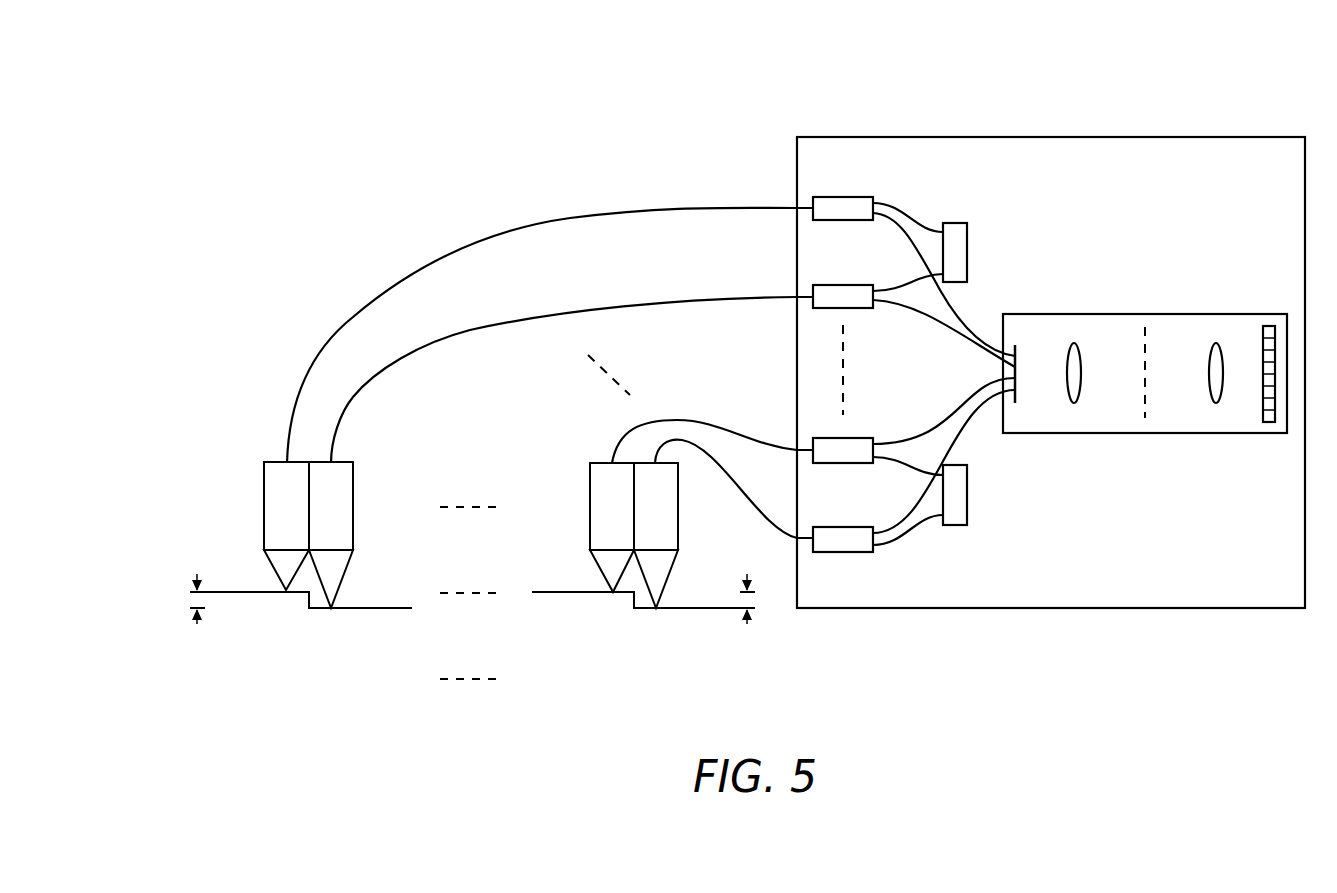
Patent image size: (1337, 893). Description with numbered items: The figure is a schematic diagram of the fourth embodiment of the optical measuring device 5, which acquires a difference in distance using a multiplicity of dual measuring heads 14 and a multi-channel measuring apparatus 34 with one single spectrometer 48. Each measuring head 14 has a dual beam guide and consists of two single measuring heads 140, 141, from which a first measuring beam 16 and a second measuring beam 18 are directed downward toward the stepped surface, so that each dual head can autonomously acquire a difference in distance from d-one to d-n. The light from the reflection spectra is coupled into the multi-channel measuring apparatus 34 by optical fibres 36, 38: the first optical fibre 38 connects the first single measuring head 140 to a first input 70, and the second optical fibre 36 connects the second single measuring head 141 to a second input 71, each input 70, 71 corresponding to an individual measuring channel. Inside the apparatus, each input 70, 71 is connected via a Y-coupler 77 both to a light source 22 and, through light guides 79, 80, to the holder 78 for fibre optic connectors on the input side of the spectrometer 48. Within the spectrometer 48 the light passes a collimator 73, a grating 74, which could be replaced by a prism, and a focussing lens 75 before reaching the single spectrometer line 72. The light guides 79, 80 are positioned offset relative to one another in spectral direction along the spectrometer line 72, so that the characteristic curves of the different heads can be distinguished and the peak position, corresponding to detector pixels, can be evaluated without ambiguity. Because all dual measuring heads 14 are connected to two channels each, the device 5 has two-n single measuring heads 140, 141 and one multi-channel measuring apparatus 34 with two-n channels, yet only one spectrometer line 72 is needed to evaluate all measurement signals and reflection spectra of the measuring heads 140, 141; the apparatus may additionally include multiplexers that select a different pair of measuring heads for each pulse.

The optical measuring device 5 is at (566, 184).
The measuring head 14 is at (355, 459).
The single measuring head 141 is at (263, 490).
The single measuring head 140 is at (354, 490).
The second measuring beam 18 is at (282, 574).
The first measuring beam 16 is at (343, 573).
The optical fibre 36 is at (458, 248).
The optical fibre 38 is at (458, 331).
The multi-channel measuring apparatus input 71 is at (794, 206).
The multi-channel measuring apparatus input 70 is at (794, 299).
The multi-channel measuring apparatus 34 is at (1281, 181).
The Y-coupler 77 is at (845, 205).
The light source 22 is at (962, 250).
The light guide 79 is at (972, 338).
The light guide 80 is at (915, 315).
The spectrometer 48 is at (1125, 314).
The holder for fibre optic connectors 78 is at (1016, 350).
The collimator 73 is at (1075, 347).
The grating 74 is at (1147, 343).
The focussing lens 75 is at (1216, 345).
The spectrometer line 72 is at (1269, 328).